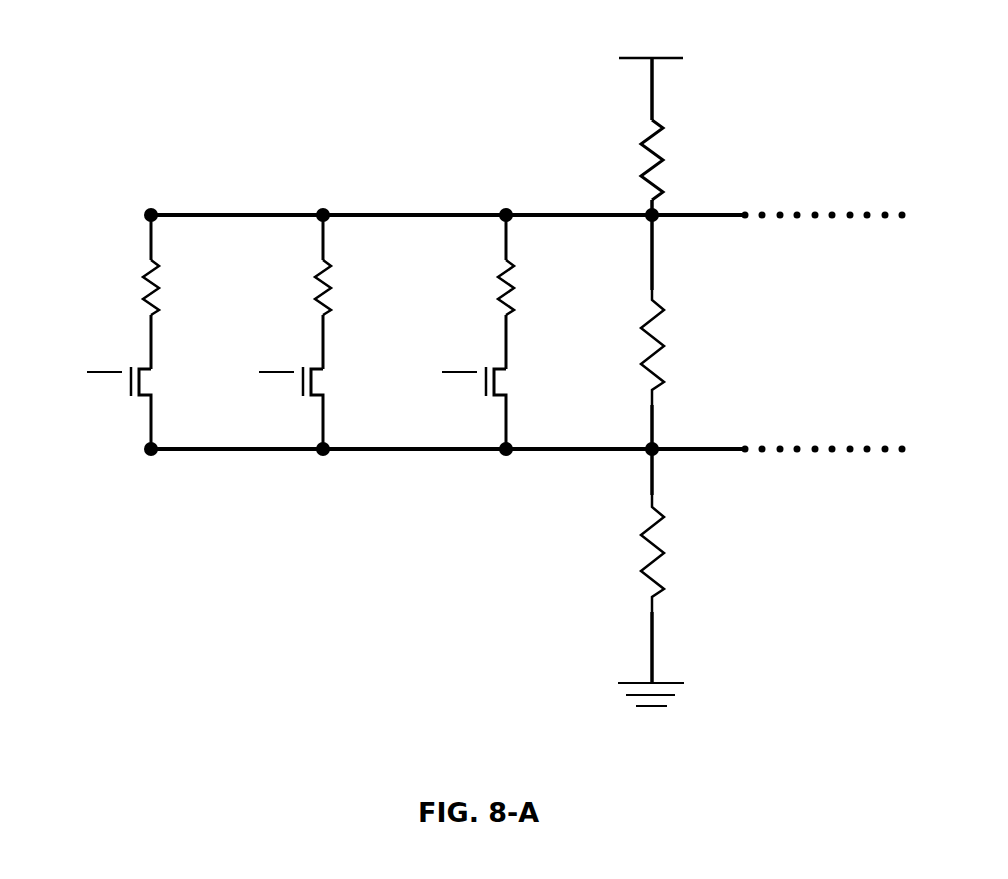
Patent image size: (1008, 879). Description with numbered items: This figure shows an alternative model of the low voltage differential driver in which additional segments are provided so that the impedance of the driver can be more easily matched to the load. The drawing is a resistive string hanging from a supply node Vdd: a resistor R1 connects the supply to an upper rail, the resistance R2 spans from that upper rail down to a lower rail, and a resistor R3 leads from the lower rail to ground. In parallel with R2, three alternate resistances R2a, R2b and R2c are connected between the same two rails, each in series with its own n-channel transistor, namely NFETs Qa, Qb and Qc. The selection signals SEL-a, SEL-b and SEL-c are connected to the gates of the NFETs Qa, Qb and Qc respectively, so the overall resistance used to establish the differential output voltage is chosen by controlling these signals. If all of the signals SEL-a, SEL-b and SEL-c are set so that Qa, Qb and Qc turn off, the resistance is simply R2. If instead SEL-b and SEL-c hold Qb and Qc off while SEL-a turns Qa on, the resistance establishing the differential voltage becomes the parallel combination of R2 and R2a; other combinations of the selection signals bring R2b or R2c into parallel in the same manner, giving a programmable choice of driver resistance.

The supply voltage Vdd is at (651, 64).
The resistor R1 is at (671, 167).
The resistance R2 is at (674, 332).
The resistor R3 is at (678, 566).
The alternate resistance R2a is at (481, 292).
The alternate resistance R2b is at (297, 292).
The alternate resistance R2c is at (125, 292).
The NFET Qa is at (510, 408).
The NFET Qb is at (327, 408).
The NFET Qc is at (154, 408).
The selection signal SEL-a is at (432, 356).
The selection signal SEL-b is at (255, 356).
The selection signal SEL-c is at (83, 356).